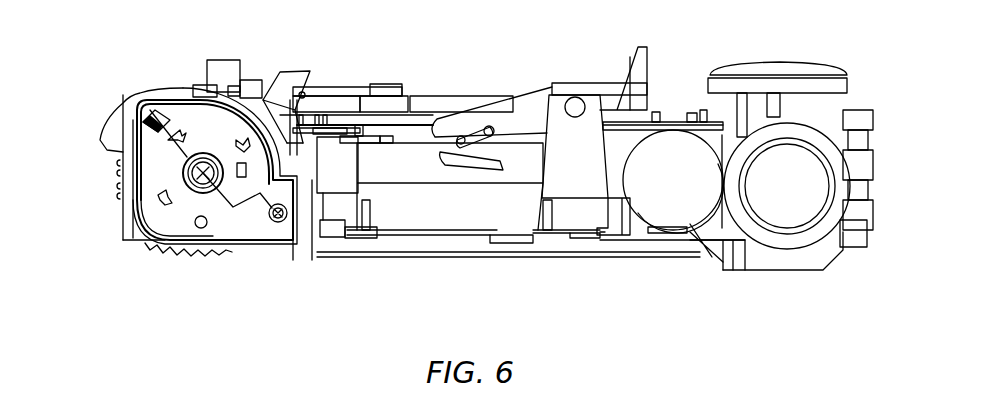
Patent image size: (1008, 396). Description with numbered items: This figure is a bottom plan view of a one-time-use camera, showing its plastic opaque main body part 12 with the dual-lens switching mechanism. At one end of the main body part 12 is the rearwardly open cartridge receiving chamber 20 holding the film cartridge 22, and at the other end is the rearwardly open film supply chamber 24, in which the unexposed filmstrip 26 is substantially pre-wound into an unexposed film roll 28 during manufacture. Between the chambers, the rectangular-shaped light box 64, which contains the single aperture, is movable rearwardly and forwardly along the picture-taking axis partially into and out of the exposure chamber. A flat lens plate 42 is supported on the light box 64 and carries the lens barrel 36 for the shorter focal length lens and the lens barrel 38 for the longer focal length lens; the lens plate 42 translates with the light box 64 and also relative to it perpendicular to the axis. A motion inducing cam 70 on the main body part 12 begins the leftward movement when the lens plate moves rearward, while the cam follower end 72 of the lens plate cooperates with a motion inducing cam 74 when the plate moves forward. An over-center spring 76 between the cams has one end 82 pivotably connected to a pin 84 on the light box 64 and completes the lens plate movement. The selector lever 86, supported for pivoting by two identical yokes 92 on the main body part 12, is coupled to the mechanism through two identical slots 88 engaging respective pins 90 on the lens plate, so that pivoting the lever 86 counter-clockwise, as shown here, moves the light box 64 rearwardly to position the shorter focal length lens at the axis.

The main body part 12 is at (110, 170).
The cartridge receiving chamber 20 is at (153, 233).
The film cartridge 22 is at (247, 233).
The film supply chamber 24 is at (810, 257).
The unexposed filmstrip 26 is at (737, 270).
The unexposed film roll 28 is at (782, 245).
The lens barrel 36 is at (450, 98).
The lens barrel 38 is at (387, 100).
The lens plate 42 is at (377, 121).
The light box 64 is at (417, 145).
The motion inducing cam 70 is at (625, 97).
The cam follower end 72 is at (290, 110).
The motion inducing cam 74 is at (290, 70).
The over-center spring 76 is at (324, 138).
The spring end 82 is at (362, 144).
The pin 84 is at (359, 130).
The selector lever 86 is at (512, 82).
The slots 88 is at (540, 133).
The pins 90 is at (467, 143).
The yokes 92 is at (548, 93).